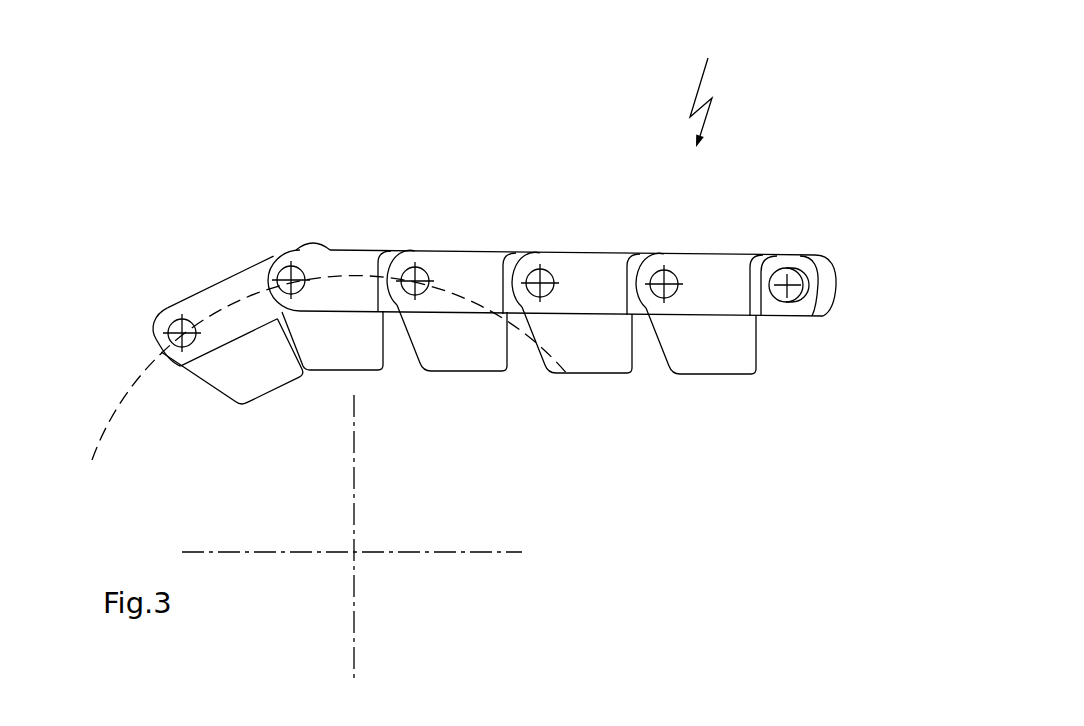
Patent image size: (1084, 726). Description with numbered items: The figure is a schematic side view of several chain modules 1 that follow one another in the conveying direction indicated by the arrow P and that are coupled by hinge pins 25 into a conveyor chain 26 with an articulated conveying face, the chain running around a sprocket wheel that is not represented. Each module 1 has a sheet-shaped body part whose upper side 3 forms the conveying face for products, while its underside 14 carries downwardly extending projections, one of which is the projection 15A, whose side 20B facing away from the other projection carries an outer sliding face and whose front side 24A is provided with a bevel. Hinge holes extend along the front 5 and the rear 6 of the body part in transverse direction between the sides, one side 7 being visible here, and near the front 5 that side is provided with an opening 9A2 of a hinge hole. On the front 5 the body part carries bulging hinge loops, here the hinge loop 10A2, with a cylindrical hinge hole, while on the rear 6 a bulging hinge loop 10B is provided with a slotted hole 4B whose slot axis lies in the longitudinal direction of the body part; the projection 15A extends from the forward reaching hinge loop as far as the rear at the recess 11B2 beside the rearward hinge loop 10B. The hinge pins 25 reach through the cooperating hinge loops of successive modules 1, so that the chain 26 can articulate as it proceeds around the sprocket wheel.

The chain module 1 is at (156, 262).
The upper side 3 is at (213, 280).
The front 5 is at (157, 341).
The rear 6 is at (311, 243).
The side 7 is at (224, 325).
The underside 14 is at (232, 345).
The projection 15A is at (215, 370).
The side facing away of projection 20B is at (243, 367).
The front side of projection 24A is at (213, 400).
The hinge pin 25 is at (182, 318).
The conveyor chain 26 is at (703, 89).
The opening of hinge hole 9A2 is at (410, 268).
The bulging hinge loop 10A2 is at (160, 318).
The recess 11B2 is at (803, 267).
The slotted hole 4B is at (798, 287).
The bulging hinge loop 10B is at (824, 297).
The conveying direction arrow P is at (470, 114).